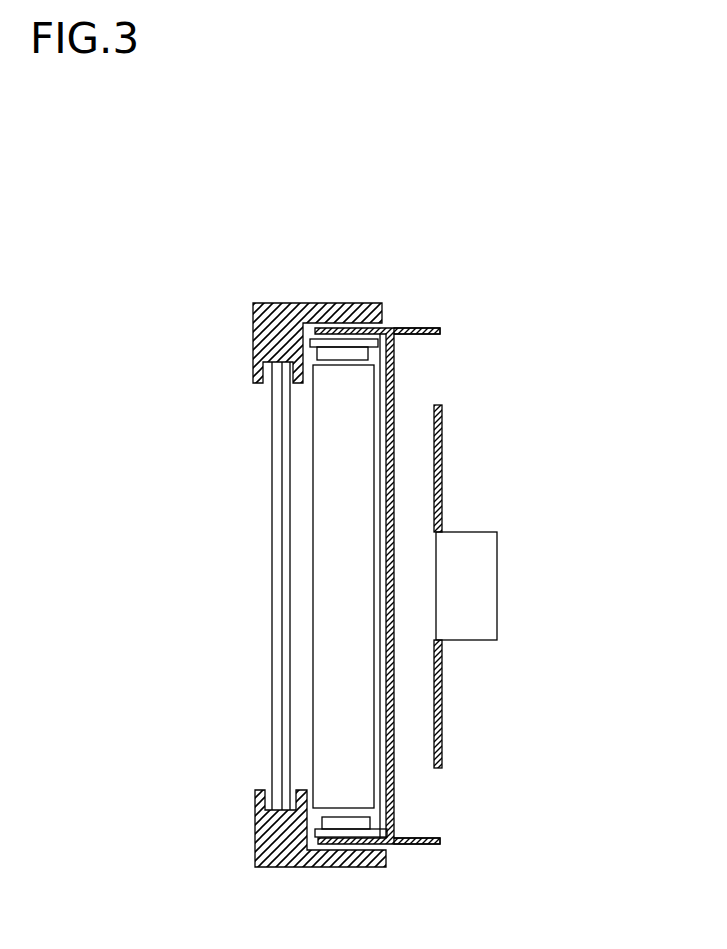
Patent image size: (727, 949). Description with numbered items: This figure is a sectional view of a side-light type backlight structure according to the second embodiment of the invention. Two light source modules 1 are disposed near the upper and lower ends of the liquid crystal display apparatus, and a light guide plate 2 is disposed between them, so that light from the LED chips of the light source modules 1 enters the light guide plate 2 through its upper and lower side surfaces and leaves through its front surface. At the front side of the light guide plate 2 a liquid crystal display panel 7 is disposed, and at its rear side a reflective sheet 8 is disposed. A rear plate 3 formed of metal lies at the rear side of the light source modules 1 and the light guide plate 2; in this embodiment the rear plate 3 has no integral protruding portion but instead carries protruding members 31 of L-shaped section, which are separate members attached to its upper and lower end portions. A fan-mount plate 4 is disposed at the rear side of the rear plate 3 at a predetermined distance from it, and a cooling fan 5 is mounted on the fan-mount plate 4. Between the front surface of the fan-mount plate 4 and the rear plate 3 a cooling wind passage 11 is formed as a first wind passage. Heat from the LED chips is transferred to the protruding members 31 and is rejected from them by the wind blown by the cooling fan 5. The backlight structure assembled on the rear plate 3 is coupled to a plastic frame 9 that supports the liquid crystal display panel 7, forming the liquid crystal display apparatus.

The light source module 1 is at (328, 352).
The light guide plate 2 is at (337, 632).
The rear plate 3 is at (375, 330).
The protruding member 31 is at (431, 327).
The fan-mount plate 4 is at (441, 432).
The cooling fan 5 is at (480, 583).
The liquid crystal display panel 7 is at (278, 522).
The reflective sheet 8 is at (381, 580).
The plastic frame 9 is at (278, 330).
The cooling wind passage 11 is at (425, 720).